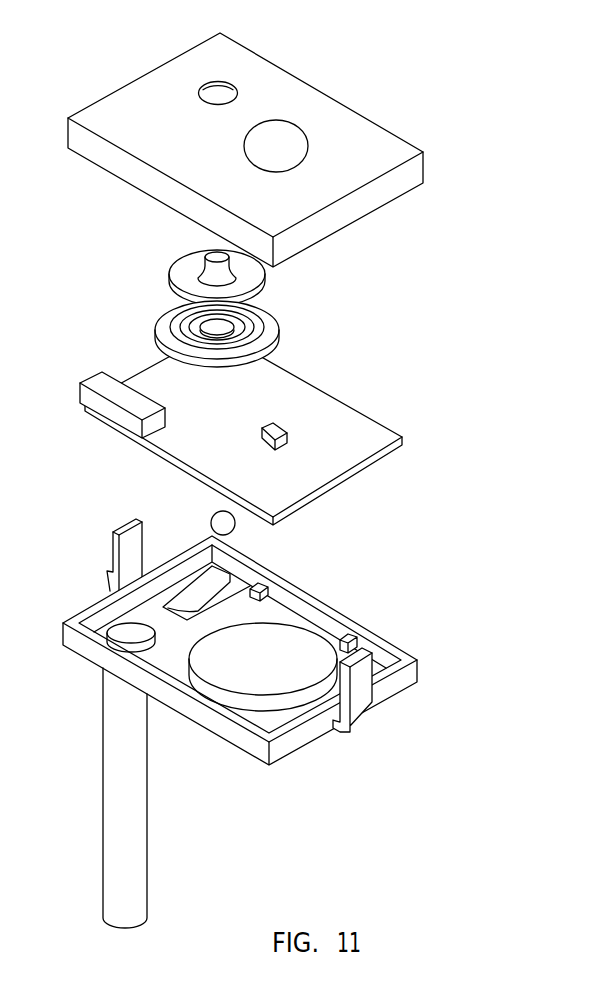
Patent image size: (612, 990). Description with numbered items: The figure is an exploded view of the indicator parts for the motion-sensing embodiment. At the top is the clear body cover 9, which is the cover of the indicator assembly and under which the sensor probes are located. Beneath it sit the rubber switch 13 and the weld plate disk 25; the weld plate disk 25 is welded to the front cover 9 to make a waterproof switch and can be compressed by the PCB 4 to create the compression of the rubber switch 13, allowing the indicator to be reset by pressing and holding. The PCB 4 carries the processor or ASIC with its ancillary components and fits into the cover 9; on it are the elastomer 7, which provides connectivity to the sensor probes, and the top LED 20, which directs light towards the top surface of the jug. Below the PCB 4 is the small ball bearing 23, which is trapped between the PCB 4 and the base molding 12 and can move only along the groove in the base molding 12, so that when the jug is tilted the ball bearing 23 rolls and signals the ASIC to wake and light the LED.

The cover 9 is at (370, 118).
The switch 13 is at (177, 258).
The weld plate disk 25 is at (277, 337).
The elastomer 7 is at (90, 375).
The top LED 20 is at (280, 426).
The PCB 4 is at (385, 462).
The ball bearing 23 is at (235, 530).
The base molding 12 is at (307, 737).